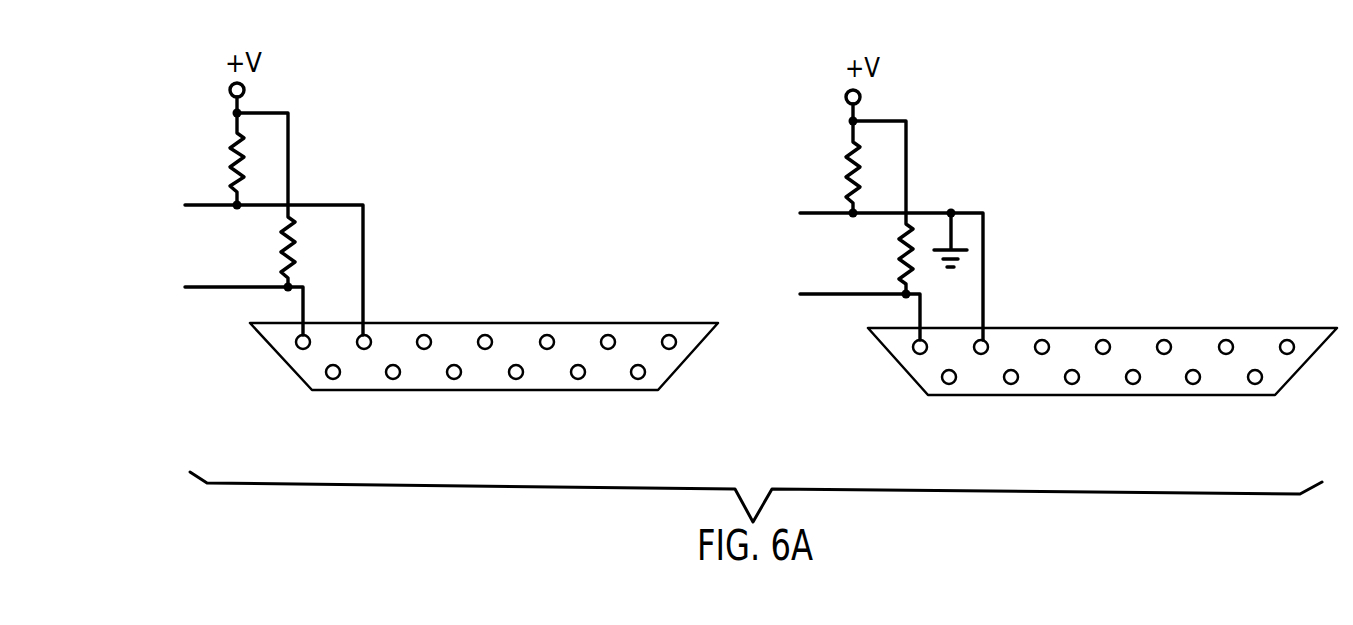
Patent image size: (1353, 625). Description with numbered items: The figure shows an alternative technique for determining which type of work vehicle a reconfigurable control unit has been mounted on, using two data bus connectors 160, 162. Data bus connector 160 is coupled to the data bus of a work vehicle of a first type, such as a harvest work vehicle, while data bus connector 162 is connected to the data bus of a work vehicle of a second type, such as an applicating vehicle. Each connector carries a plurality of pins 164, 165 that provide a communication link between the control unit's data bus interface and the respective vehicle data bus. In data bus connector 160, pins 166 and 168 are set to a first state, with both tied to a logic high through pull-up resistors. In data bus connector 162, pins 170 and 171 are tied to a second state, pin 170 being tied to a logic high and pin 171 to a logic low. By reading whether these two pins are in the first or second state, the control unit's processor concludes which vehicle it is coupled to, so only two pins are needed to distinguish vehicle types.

The data bus connector 160 is at (562, 323).
The data bus connector 162 is at (1179, 328).
The pins 164 is at (516, 379).
The pins 165 is at (1072, 384).
The pin 166 is at (300, 347).
The pin 168 is at (371, 346).
The pin 170 is at (914, 351).
The pin 171 is at (988, 347).